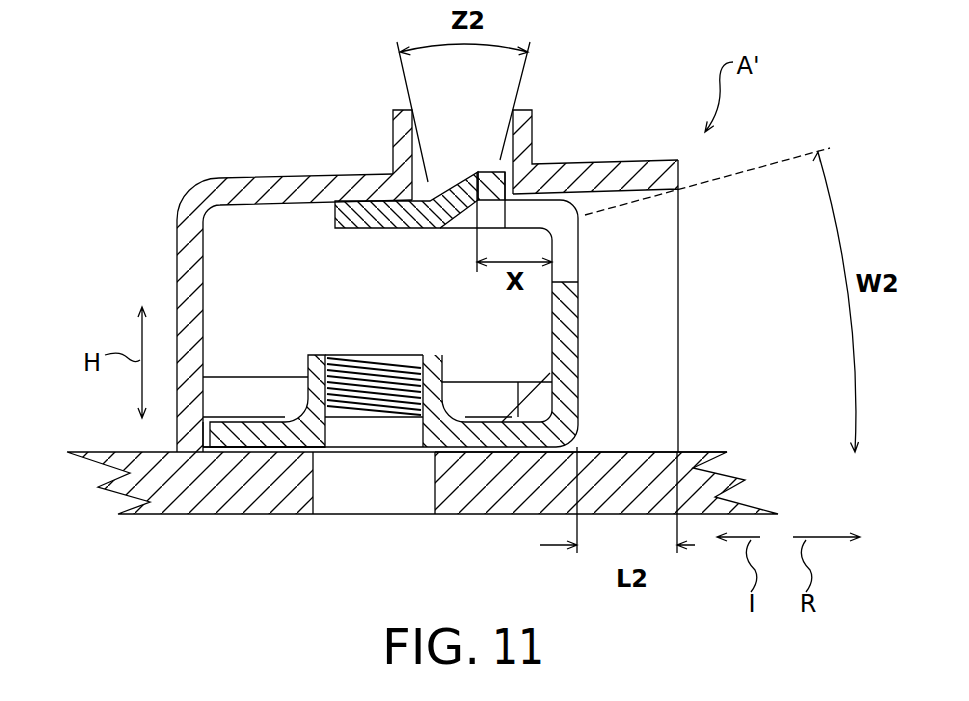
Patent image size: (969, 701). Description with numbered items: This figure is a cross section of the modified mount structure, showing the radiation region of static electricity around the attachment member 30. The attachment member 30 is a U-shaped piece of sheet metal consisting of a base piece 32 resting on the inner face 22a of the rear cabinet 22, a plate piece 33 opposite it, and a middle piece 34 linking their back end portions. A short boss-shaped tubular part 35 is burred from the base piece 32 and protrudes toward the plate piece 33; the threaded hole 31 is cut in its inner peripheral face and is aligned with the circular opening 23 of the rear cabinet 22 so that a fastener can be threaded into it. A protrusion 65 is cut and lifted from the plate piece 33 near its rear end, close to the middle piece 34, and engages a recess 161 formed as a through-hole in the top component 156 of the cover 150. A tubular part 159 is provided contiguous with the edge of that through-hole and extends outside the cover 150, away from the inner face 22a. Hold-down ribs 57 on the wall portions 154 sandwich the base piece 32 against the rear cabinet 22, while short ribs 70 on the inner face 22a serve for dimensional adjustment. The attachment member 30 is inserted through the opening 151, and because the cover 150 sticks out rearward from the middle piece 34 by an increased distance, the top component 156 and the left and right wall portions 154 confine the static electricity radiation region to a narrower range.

The cover 150 is at (460, 280).
The top component 156 is at (268, 187).
The tubular part 159 is at (532, 117).
The left and right wall portions 154 is at (678, 222).
The recess 161 is at (412, 182).
The opening 151 is at (696, 327).
The attachment member 30 is at (430, 262).
The plate piece 33 is at (363, 230).
The protrusion 65 is at (490, 170).
The middle piece 34 is at (573, 373).
The base piece 32 is at (238, 430).
The tubular part 35 is at (307, 363).
The threaded hole 31 is at (380, 367).
The hold-down ribs 57 is at (487, 382).
The ribs 70 is at (663, 447).
The rear cabinet 22 is at (447, 500).
The inner face 22a is at (707, 453).
The circular opening 23 is at (377, 510).